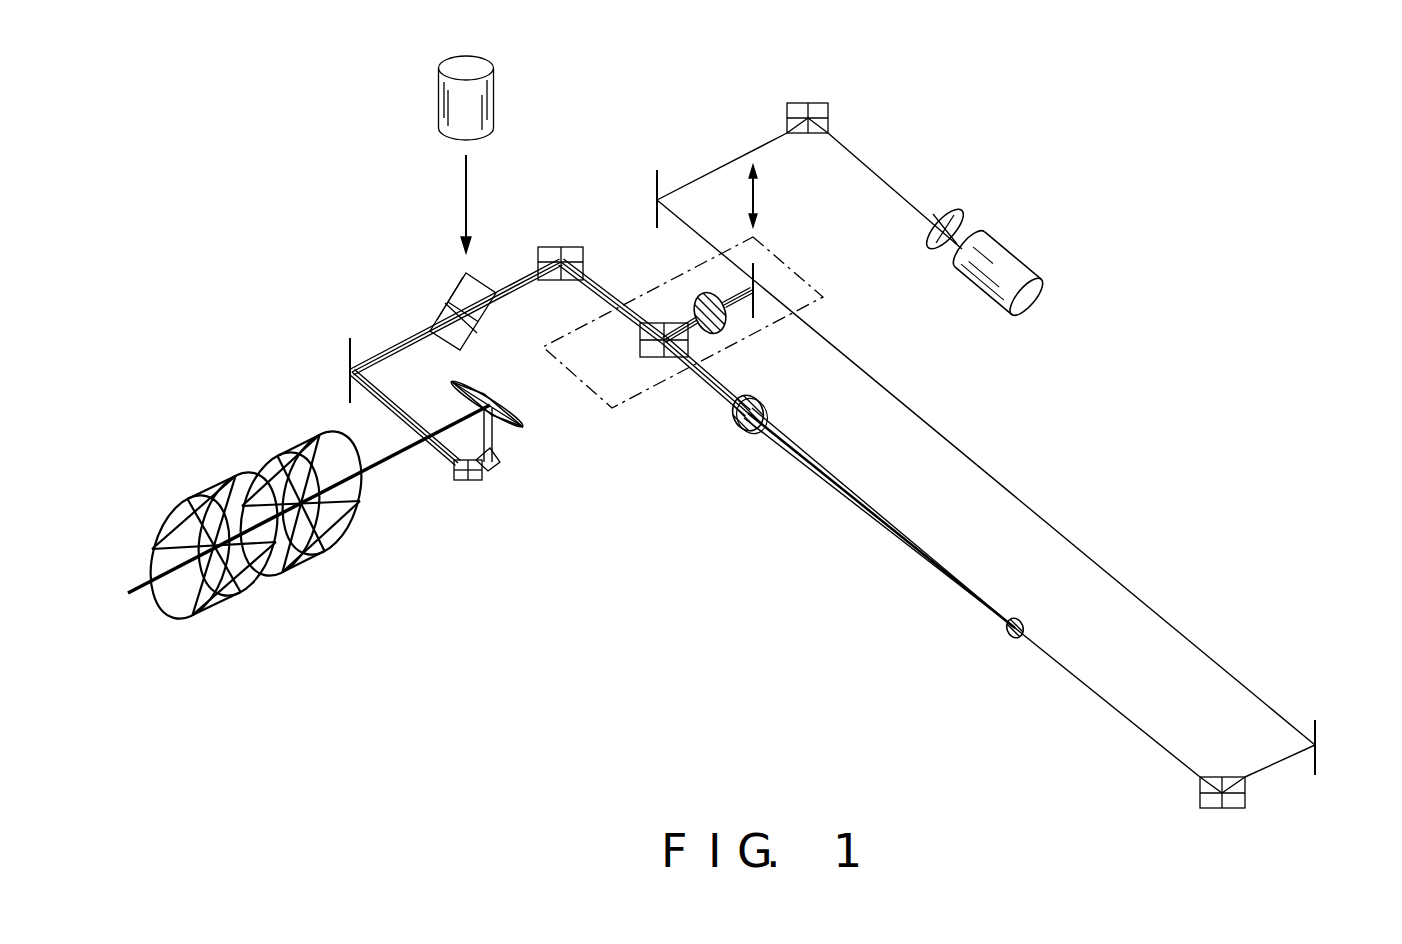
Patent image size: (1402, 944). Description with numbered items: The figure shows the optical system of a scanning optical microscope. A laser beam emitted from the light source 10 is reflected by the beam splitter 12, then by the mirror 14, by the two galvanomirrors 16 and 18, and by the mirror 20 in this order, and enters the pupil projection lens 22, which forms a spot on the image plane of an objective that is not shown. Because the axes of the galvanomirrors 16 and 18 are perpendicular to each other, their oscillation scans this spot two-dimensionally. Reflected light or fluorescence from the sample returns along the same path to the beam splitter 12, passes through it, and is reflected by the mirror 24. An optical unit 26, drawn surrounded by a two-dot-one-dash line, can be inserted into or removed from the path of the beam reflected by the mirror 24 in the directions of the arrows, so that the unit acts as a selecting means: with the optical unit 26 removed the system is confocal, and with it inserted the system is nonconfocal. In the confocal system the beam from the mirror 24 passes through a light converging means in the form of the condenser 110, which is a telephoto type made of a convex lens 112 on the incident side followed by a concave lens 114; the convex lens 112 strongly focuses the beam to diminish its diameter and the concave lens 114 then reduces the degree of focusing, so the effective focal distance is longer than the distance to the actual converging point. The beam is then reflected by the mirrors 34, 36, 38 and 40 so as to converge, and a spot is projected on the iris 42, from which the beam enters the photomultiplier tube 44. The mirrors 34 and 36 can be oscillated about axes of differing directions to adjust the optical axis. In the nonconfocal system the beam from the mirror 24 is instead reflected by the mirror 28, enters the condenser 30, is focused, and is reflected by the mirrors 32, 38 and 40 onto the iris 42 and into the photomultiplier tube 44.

The light source 10 is at (495, 96).
The beam splitter 12 is at (448, 294).
The mirror 14 is at (348, 345).
The galvanomirror 16 is at (460, 484).
The galvanomirror 18 is at (500, 458).
The mirror 20 is at (490, 398).
The pupil projection lens 22 is at (388, 552).
The mirror 24 is at (553, 245).
The optical unit 26 is at (823, 297).
The mirror 28 is at (638, 340).
The condenser 30 is at (732, 330).
The mirror 32 is at (757, 277).
The mirror 34 is at (1200, 796).
The mirror 36 is at (1318, 742).
The mirror 38 is at (655, 188).
The mirror 40 is at (795, 103).
The iris 42 is at (960, 212).
The photomultiplier tube 44 is at (1010, 245).
The condenser 110 is at (716, 404).
The convex lens 112 is at (768, 413).
The concave lens 114 is at (1025, 628).